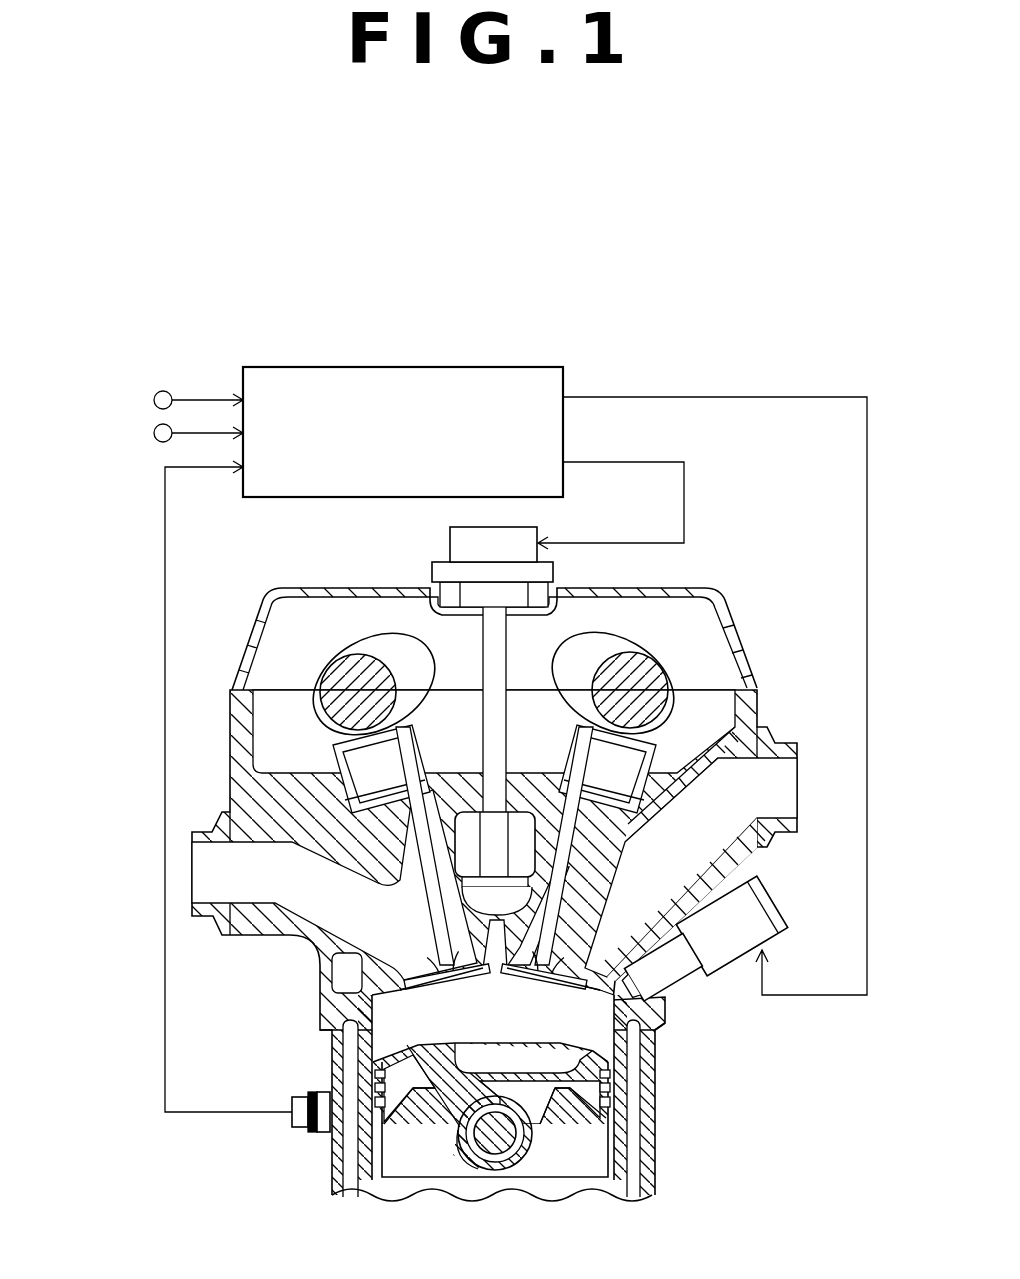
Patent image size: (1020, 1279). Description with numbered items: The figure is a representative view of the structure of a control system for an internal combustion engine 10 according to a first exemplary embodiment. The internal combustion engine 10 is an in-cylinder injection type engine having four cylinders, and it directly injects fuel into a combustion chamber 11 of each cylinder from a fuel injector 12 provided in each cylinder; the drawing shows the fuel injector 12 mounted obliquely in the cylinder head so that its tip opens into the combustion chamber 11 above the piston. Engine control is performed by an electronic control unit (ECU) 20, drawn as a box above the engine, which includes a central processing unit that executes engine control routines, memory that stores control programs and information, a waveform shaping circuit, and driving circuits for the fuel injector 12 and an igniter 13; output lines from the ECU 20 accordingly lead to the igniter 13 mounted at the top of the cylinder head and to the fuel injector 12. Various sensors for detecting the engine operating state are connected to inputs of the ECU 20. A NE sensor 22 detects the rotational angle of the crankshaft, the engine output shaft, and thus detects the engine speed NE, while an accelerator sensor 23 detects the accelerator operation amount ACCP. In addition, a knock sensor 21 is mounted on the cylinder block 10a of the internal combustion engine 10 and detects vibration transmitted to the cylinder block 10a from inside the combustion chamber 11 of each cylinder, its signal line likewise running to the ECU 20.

The internal combustion engine 10 is at (233, 622).
The cylinder block 10a is at (657, 1088).
The combustion chamber 11 is at (520, 1027).
The fuel injector 12 is at (777, 895).
The igniter 13 is at (450, 540).
The electronic control unit (ECU) 20 is at (563, 425).
The knock sensor 21 is at (303, 1092).
The NE sensor 22 is at (154, 400).
The accelerator sensor 23 is at (154, 433).